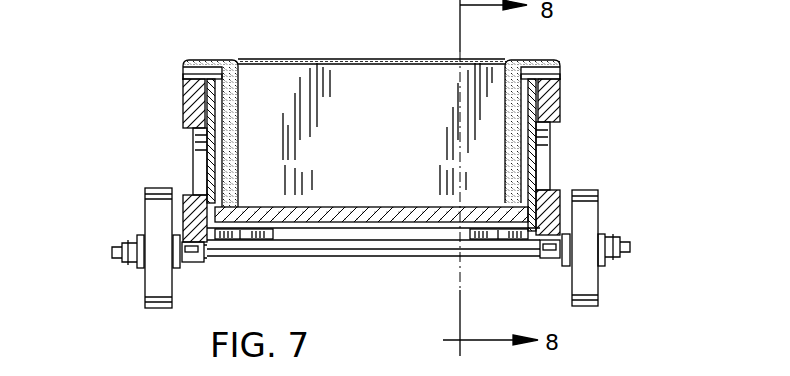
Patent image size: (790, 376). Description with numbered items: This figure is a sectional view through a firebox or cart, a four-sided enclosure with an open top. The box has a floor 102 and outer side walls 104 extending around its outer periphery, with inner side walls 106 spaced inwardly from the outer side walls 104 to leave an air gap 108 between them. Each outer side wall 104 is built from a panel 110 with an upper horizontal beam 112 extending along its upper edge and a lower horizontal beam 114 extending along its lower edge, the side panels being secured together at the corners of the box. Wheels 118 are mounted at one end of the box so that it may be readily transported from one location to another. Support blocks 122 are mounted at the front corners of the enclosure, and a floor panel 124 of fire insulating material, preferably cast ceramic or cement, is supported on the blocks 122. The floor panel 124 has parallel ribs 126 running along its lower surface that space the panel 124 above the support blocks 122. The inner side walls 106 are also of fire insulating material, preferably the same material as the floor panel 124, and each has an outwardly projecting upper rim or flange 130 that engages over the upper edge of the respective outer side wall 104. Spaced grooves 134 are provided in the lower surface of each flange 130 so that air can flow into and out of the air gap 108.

The floor 102 is at (420, 205).
The outer side walls 104 is at (162, 125).
The inner side walls 106 is at (237, 83).
The air gap 108 is at (218, 111).
The panel 110 is at (193, 145).
The upper horizontal beam 112 is at (183, 101).
The lower horizontal beam 114 is at (188, 197).
The wheels 118 is at (147, 280).
The support blocks 122 is at (232, 242).
The floor panel 124 is at (338, 212).
The ribs 126 is at (363, 228).
The upper rim or flange 130 is at (208, 61).
The grooves 134 is at (188, 76).